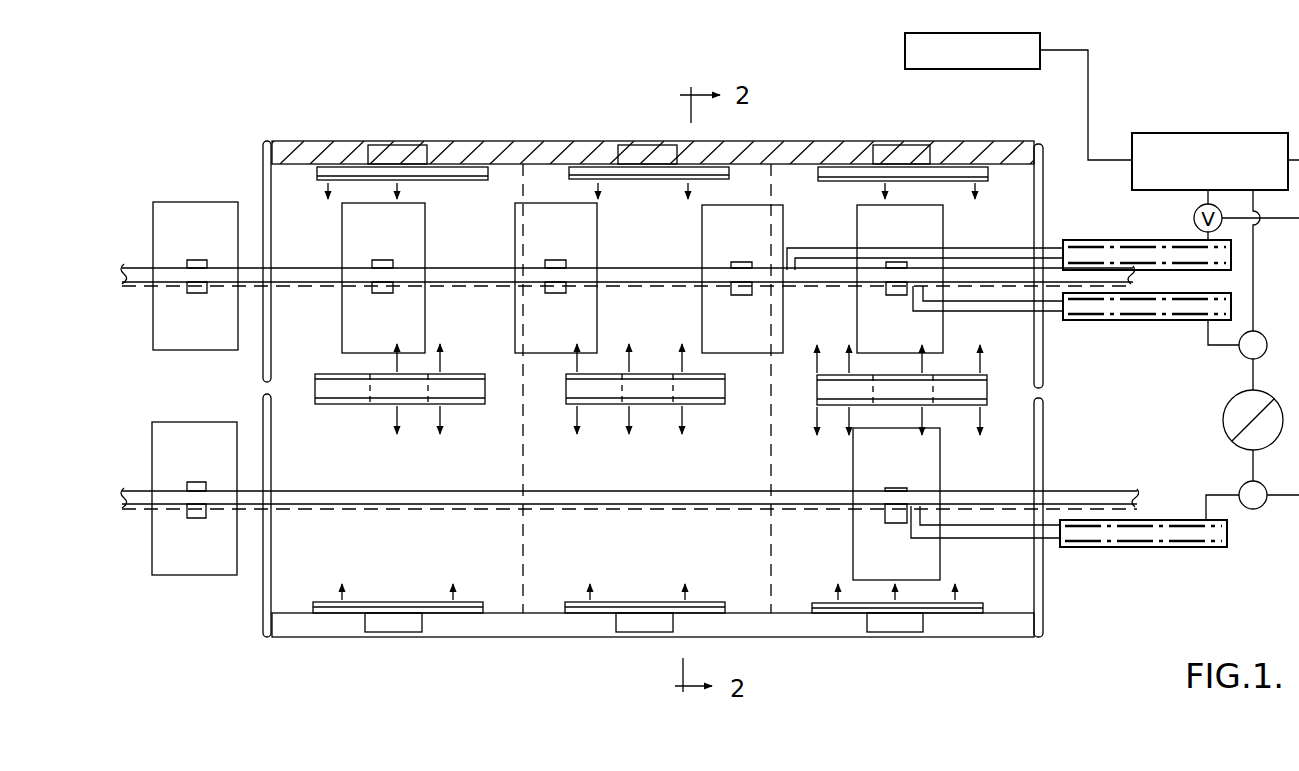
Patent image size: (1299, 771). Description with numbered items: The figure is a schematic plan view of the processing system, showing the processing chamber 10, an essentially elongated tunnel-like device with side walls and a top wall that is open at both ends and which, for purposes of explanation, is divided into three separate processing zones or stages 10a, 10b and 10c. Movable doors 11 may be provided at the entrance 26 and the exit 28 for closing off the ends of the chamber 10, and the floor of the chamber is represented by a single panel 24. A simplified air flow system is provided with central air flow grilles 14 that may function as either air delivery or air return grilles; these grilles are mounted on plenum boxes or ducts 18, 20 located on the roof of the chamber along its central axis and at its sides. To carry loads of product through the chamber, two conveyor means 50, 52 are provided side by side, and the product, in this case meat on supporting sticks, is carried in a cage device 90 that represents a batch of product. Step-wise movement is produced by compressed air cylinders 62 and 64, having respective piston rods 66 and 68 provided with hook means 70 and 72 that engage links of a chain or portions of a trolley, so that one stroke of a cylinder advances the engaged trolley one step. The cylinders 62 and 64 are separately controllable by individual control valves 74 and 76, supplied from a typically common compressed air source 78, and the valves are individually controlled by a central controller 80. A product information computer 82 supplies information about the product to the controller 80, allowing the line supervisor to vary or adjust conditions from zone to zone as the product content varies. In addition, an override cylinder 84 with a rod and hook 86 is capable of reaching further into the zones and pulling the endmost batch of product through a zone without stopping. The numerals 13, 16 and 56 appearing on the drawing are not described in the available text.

The processing chamber 10 is at (645, 382).
The processing zone 10a is at (472, 202).
The processing zone 10b is at (620, 206).
The processing zone 10c is at (816, 206).
The movable doors 11 is at (442, 142).
The end walls 13 is at (262, 152).
The central air flow grilles 14 is at (422, 180).
The intermediate heaters 16 is at (648, 396).
The plenum boxes or ducts 18 is at (394, 152).
The plenum boxes or ducts 20 is at (430, 392).
The floor panel 24 is at (630, 389).
The entrance 26 is at (298, 386).
The exit 28 is at (995, 477).
The conveyor means 50 is at (498, 267).
The conveyor means 52 is at (493, 487).
The clamps 56 is at (382, 260).
The compressed air cylinder 62 is at (1119, 320).
The compressed air cylinder 64 is at (1177, 547).
The piston rod 66 is at (1054, 318).
The piston rod 68 is at (1052, 542).
The hook means 70 is at (921, 310).
The hook means 72 is at (922, 538).
The control valve 74 is at (1239, 355).
The control valve 76 is at (1240, 484).
The compressed air source 78 is at (1223, 419).
The central controller 80 is at (1211, 133).
The product information computer 82 is at (905, 52).
The override cylinder 84 is at (1095, 240).
The rod and hook 86 is at (976, 257).
The cage device 90 is at (342, 304).